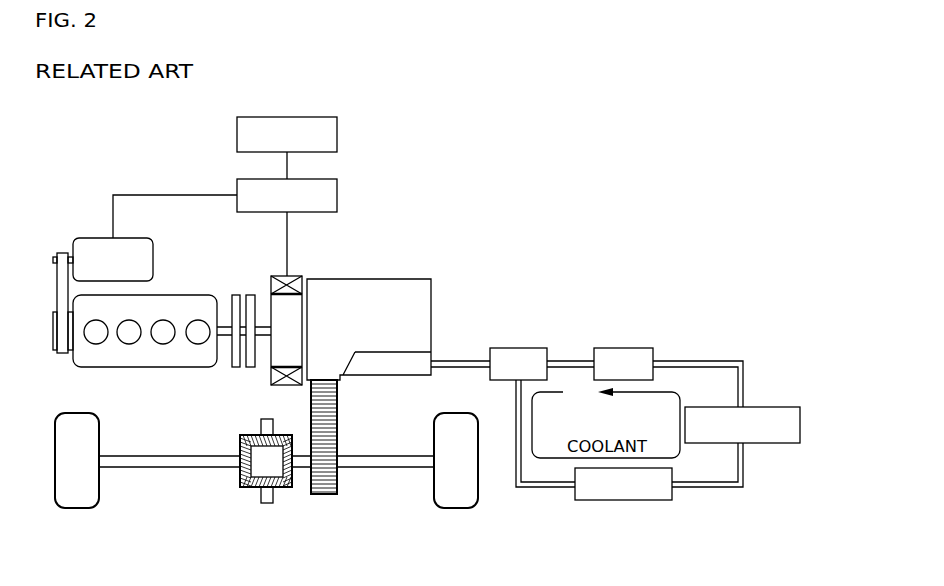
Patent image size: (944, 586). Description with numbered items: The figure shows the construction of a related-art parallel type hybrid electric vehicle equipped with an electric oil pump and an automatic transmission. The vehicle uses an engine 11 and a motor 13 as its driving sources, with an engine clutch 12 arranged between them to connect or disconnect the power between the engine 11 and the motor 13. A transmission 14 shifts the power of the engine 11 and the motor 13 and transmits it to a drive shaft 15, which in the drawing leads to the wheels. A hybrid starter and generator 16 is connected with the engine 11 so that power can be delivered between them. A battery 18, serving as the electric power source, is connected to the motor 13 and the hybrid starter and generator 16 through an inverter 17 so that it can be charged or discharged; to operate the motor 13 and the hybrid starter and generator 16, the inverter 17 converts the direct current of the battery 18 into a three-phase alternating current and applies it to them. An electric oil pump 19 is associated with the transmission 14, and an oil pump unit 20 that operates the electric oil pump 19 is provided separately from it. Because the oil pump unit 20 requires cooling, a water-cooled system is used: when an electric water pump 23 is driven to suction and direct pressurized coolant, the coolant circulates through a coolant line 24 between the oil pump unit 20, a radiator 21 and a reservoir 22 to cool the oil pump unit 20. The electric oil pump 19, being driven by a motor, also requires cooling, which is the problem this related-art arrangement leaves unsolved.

The engine 11 is at (185, 295).
The engine clutch 12 is at (235, 295).
The motor 13 is at (293, 276).
The transmission 14 is at (395, 279).
The drive shaft 15 is at (381, 467).
The hybrid starter and generator 16 is at (87, 238).
The inverter 17 is at (337, 196).
The battery 18 is at (337, 133).
The electric oil pump 19 is at (431, 358).
The oil pump unit 20 is at (514, 348).
The radiator 21 is at (624, 500).
The reservoir 22 is at (800, 425).
The electric water pump 23 is at (617, 348).
The coolant line 24 is at (695, 361).